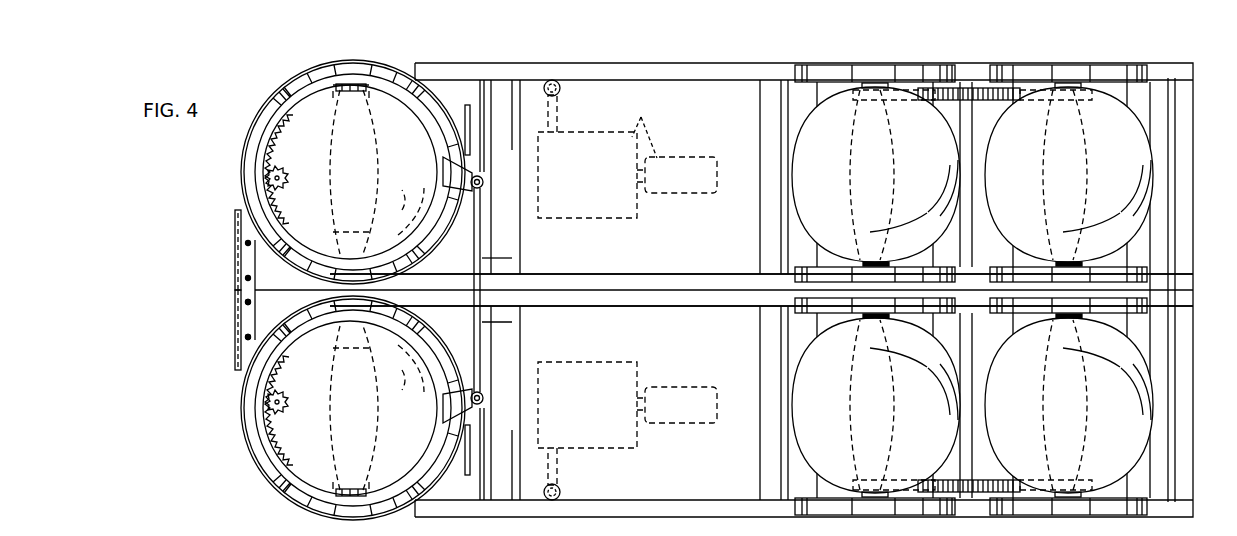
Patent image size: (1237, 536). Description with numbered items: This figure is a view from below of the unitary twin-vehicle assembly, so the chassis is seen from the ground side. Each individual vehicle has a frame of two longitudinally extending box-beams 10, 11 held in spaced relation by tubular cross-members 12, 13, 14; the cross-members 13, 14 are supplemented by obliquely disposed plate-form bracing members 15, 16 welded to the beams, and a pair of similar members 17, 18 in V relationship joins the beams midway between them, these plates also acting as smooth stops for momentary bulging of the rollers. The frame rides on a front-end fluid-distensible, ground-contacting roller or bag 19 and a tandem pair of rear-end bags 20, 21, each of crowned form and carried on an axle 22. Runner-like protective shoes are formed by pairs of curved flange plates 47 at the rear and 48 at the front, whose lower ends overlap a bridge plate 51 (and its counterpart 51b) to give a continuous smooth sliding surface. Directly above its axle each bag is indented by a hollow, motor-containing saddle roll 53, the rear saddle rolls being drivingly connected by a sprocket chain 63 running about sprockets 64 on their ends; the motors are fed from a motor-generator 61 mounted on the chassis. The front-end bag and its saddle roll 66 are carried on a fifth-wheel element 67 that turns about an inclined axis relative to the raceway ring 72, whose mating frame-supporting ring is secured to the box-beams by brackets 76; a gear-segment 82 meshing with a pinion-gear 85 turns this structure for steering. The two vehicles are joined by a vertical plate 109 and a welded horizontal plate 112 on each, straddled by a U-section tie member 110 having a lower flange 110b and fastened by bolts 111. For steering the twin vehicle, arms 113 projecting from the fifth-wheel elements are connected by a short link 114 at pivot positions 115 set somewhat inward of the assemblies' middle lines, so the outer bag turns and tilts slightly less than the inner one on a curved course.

The box-beam 10 is at (645, 65).
The box-beam 11 is at (615, 278).
The tubular cross-member 12 is at (517, 236).
The tubular cross-member 13 is at (762, 118).
The tubular cross-member 14 is at (1168, 122).
The bracing cross member 15 is at (800, 97).
The bracing cross member 16 is at (1145, 96).
The V-relationship member 17 is at (960, 133).
The V-relationship member 18 is at (988, 125).
The front-end roller or bag 19 is at (417, 135).
The rear-end roller or bag 20 is at (800, 213).
The rear-end roller or bag 21 is at (1013, 230).
The axle 22 is at (367, 85).
The curved flange plate 47 is at (835, 68).
The curved flange plate 48 is at (310, 82).
The bridge plate 51 is at (345, 70).
The closure tab 51b is at (875, 65).
The saddle roll 53 is at (852, 195).
The motor-generator 61 is at (641, 115).
The sprocket chain 63 is at (980, 80).
The sprocket 64 is at (895, 88).
The saddle roll 66 is at (373, 149).
The fifth-wheel element 67 is at (265, 113).
The raceway ring 72 is at (240, 152).
The bracket 76 is at (437, 82).
The gear-segment 82 is at (273, 140).
The pinion-gear 85 is at (290, 195).
The vertical plate 109 is at (236, 270).
The tie member 110 is at (237, 230).
The lower flange 110b is at (240, 262).
The bolt 111 is at (250, 280).
The horizontal plate 112 is at (262, 288).
The arm 113 is at (460, 172).
The link 114 is at (485, 258).
The pivot position 115 is at (482, 182).